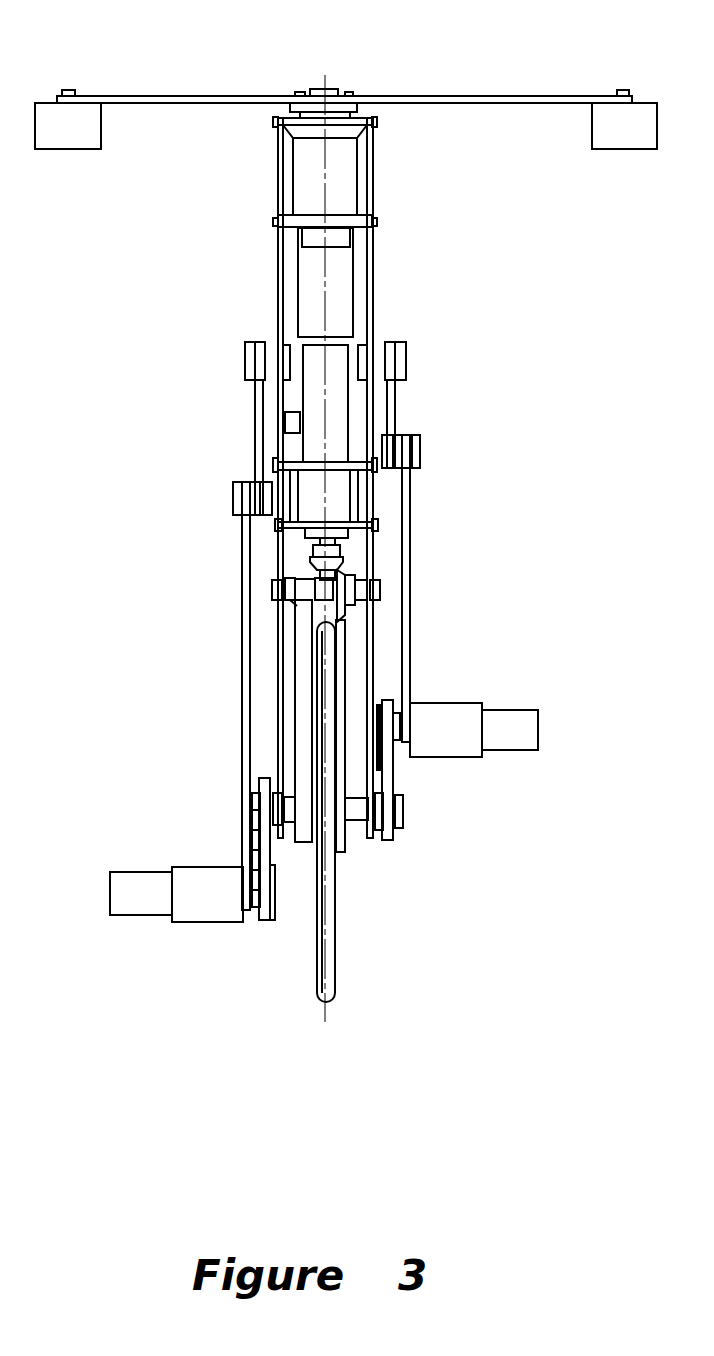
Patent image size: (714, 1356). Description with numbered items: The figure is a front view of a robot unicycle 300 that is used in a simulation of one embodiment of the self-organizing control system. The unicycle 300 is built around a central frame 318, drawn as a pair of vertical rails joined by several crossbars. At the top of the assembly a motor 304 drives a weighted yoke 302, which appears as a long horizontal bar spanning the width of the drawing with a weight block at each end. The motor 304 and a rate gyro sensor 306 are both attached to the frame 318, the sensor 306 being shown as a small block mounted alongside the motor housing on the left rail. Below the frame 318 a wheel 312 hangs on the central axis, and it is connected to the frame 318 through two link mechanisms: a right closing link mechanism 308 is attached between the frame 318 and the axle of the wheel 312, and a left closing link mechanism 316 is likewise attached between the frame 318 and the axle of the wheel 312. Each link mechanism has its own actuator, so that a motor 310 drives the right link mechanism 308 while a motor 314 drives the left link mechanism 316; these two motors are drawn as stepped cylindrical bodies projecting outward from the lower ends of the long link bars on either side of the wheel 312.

The robot unicycle 300 is at (86, 1047).
The weighted yoke 302 is at (170, 97).
The motor 304 is at (310, 282).
The rate gyro sensor 306 is at (287, 425).
The right closing link mechanism 308 is at (245, 620).
The motor 310 is at (150, 878).
The wheel 312 is at (332, 978).
The motor 314 is at (512, 720).
The left closing link mechanism 316 is at (413, 563).
The frame 318 is at (373, 303).